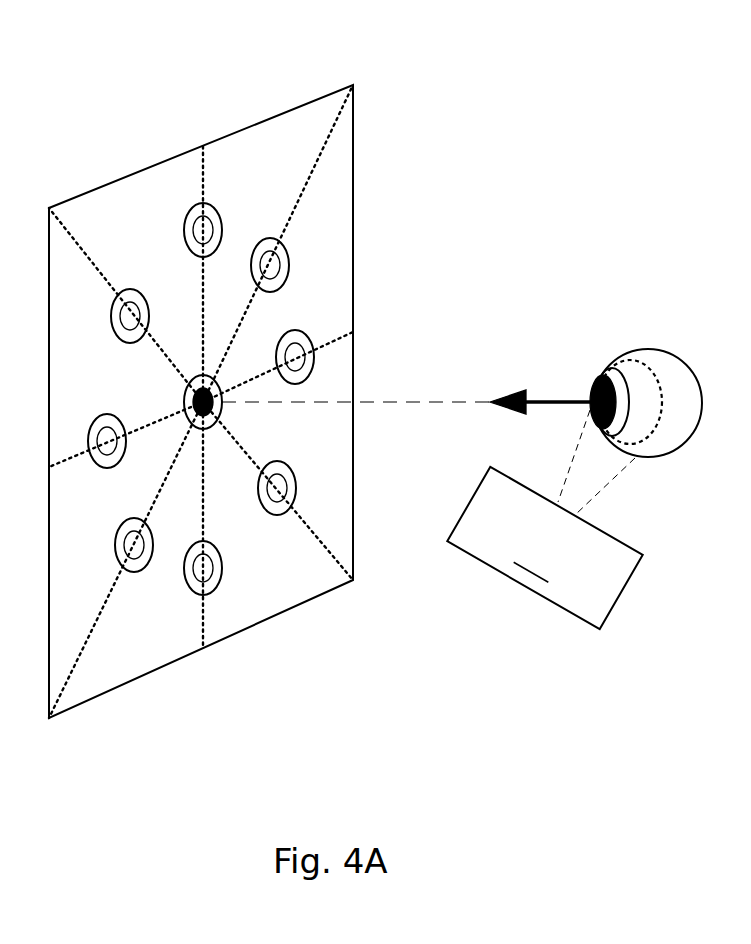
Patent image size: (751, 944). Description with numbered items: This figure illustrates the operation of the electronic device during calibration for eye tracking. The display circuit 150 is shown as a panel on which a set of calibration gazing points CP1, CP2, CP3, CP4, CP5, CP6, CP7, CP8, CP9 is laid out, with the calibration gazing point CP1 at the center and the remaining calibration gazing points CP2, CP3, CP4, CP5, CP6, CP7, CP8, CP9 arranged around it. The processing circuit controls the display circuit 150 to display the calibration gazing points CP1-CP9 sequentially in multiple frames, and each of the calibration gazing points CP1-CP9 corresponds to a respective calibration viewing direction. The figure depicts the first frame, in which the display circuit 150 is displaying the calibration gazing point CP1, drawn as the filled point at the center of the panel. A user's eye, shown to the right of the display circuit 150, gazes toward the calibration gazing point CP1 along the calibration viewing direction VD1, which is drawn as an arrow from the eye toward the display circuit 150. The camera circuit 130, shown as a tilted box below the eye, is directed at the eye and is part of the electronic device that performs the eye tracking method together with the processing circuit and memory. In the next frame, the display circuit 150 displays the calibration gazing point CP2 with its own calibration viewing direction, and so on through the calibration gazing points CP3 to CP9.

The display circuit 150 is at (232, 125).
The calibration gazing point CP1 is at (208, 392).
The calibration gazing point CP2 is at (195, 227).
The calibration gazing point CP3 is at (283, 268).
The calibration gazing point CP4 is at (300, 355).
The calibration gazing point CP5 is at (283, 487).
The calibration gazing point CP6 is at (212, 570).
The calibration gazing point CP7 is at (134, 548).
The calibration gazing point CP8 is at (106, 447).
The calibration gazing point CP9 is at (127, 320).
The calibration viewing direction VD1 is at (548, 400).
The camera circuit 130 is at (544, 519).